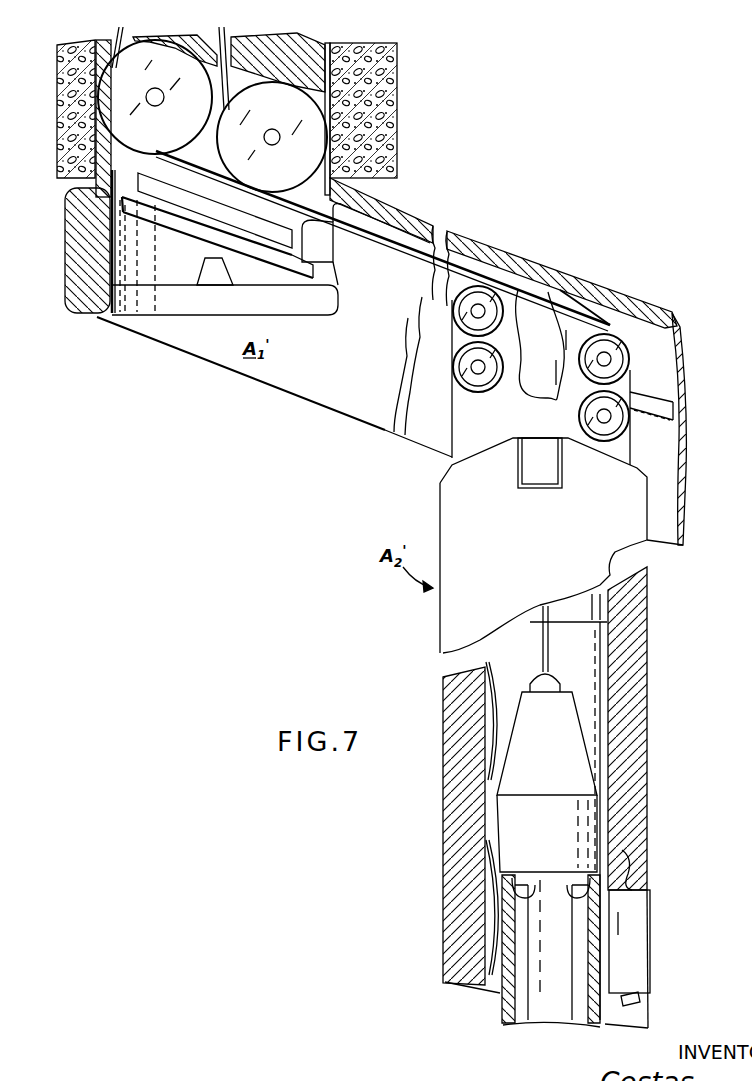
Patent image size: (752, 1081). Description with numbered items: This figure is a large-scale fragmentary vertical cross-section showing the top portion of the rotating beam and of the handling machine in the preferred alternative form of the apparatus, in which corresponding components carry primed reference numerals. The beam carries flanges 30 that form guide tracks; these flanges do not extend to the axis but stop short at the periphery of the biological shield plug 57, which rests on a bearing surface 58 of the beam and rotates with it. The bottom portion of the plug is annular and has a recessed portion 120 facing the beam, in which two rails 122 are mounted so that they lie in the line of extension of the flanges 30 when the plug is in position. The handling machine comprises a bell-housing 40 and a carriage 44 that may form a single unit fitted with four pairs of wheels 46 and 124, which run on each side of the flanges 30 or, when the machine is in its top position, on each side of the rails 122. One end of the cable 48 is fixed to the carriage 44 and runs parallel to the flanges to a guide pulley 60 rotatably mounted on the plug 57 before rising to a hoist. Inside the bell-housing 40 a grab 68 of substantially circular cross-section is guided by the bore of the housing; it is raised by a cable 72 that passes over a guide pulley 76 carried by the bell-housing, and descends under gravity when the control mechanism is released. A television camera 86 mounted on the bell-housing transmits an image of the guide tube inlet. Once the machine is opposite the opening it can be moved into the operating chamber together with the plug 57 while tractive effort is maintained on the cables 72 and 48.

The biological shield plug 57 is at (308, 45).
The guide pulley 60 is at (288, 120).
The rails 122 is at (172, 220).
The recessed portion 120 is at (345, 240).
The cable 72 is at (382, 239).
The wheels 46 is at (462, 318).
The cable 48 is at (610, 324).
The guide pulley 76 is at (453, 360).
The wheels 124 is at (473, 383).
The carriage 44 is at (533, 425).
The flanges 30 is at (673, 402).
The bearing surface 58 is at (104, 300).
The bell-housing 40 is at (453, 801).
The grab 68 is at (555, 768).
The television camera 86 is at (643, 933).